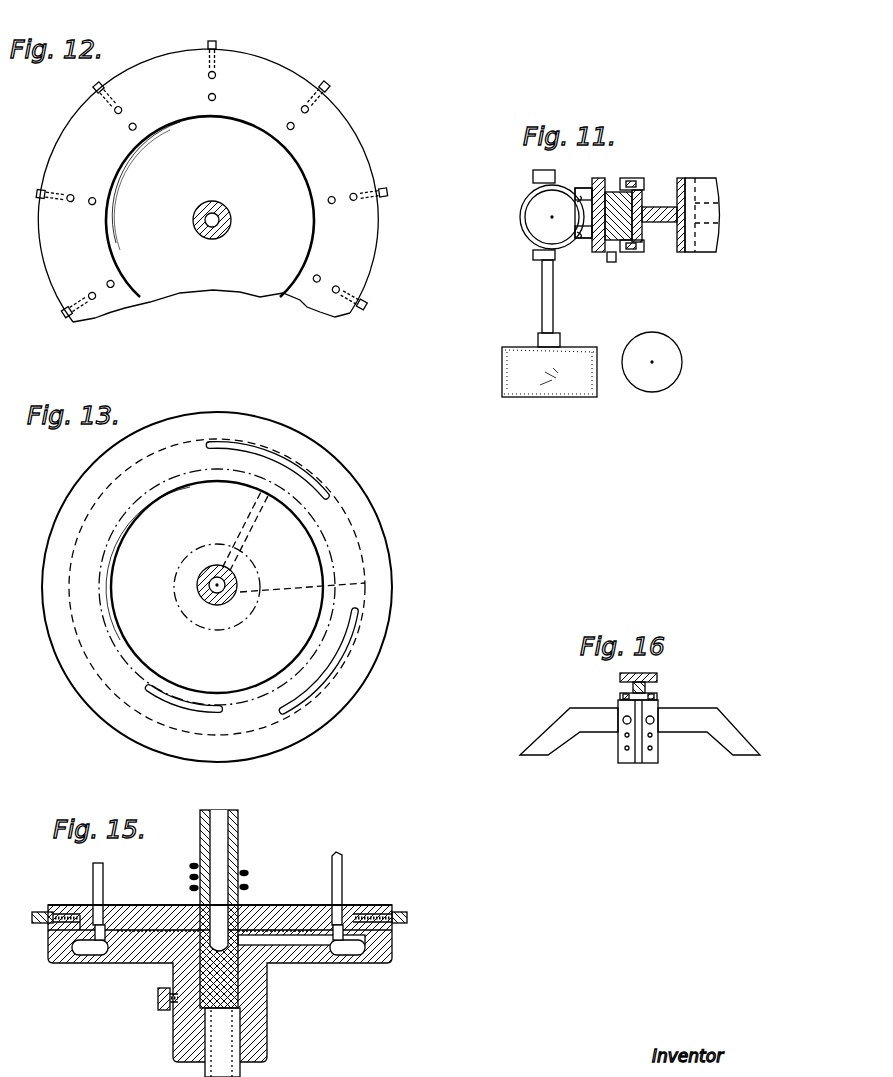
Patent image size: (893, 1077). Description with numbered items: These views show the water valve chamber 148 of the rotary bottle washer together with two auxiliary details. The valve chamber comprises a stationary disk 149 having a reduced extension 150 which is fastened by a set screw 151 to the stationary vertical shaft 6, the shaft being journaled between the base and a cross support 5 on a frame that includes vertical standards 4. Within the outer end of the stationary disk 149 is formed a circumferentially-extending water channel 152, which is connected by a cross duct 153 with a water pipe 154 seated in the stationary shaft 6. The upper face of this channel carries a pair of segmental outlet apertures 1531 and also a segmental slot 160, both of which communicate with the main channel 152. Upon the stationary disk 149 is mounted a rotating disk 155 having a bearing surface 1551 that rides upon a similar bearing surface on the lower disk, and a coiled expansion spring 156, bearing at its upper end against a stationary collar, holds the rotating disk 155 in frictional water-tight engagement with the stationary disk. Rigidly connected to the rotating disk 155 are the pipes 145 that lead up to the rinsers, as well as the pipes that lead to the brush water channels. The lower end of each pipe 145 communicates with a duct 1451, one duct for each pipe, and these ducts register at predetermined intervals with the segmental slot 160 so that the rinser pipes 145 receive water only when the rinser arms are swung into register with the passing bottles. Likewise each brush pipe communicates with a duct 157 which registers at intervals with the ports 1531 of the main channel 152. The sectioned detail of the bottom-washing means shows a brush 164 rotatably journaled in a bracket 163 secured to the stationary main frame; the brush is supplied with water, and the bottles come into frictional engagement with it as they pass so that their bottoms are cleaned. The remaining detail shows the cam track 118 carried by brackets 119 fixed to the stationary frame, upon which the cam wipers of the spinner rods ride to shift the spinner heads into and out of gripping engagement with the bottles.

In FIG. 11, the vertical standard 4 is at (680, 253).
In FIG. 16, the cross support 5 is at (619, 678).
In FIG. 12, the vertical shaft 6 is at (220, 226).
In FIG. 13, the vertical shaft 6 is at (222, 592).
In FIG. 15, the vertical shaft 6 is at (240, 848).
In FIG. 16, the cam track 118 is at (558, 721).
In FIG. 16, the bracket 119 is at (622, 763).
In FIG. 15, the pipe 145 is at (93, 873).
In FIG. 12, the duct 1451 is at (330, 196).
In FIG. 15, the water valve chamber 148 is at (392, 906).
In FIG. 13, the disk 149 is at (380, 542).
In FIG. 15, the disk 149 is at (110, 964).
In FIG. 13, the reduced extension 150 is at (365, 583).
In FIG. 15, the reduced extension 150 is at (177, 1042).
In FIG. 15, the set screw 151 is at (162, 1010).
In FIG. 13, the water channel 152 is at (353, 635).
In FIG. 15, the water channel 152 is at (84, 952).
In FIG. 13, the cross duct 153 is at (250, 538).
In FIG. 15, the cross duct 153 is at (298, 946).
In FIG. 13, the segmental outlet aperture 1531 is at (293, 463).
In FIG. 15, the segmental outlet aperture 1531 is at (395, 933).
In FIG. 12, the water pipe 154 is at (230, 218).
In FIG. 13, the water pipe 154 is at (213, 597).
In FIG. 15, the water pipe 154 is at (222, 830).
In FIG. 12, the rotating disk 155 is at (372, 262).
In FIG. 15, the rotating disk 155 is at (108, 930).
In FIG. 12, the bearing surface 1551 is at (347, 242).
In FIG. 15, the bearing surface 1551 is at (100, 925).
In FIG. 15, the coiled expansion spring 156 is at (249, 876).
In FIG. 12, the duct 157 is at (389, 194).
In FIG. 15, the duct 157 is at (42, 911).
In FIG. 13, the segmental slot 160 is at (214, 587).
In FIG. 15, the segmental slot 160 is at (100, 942).
In FIG. 11, the bracket 163 is at (610, 190).
In FIG. 11, the brush 164 is at (552, 395).